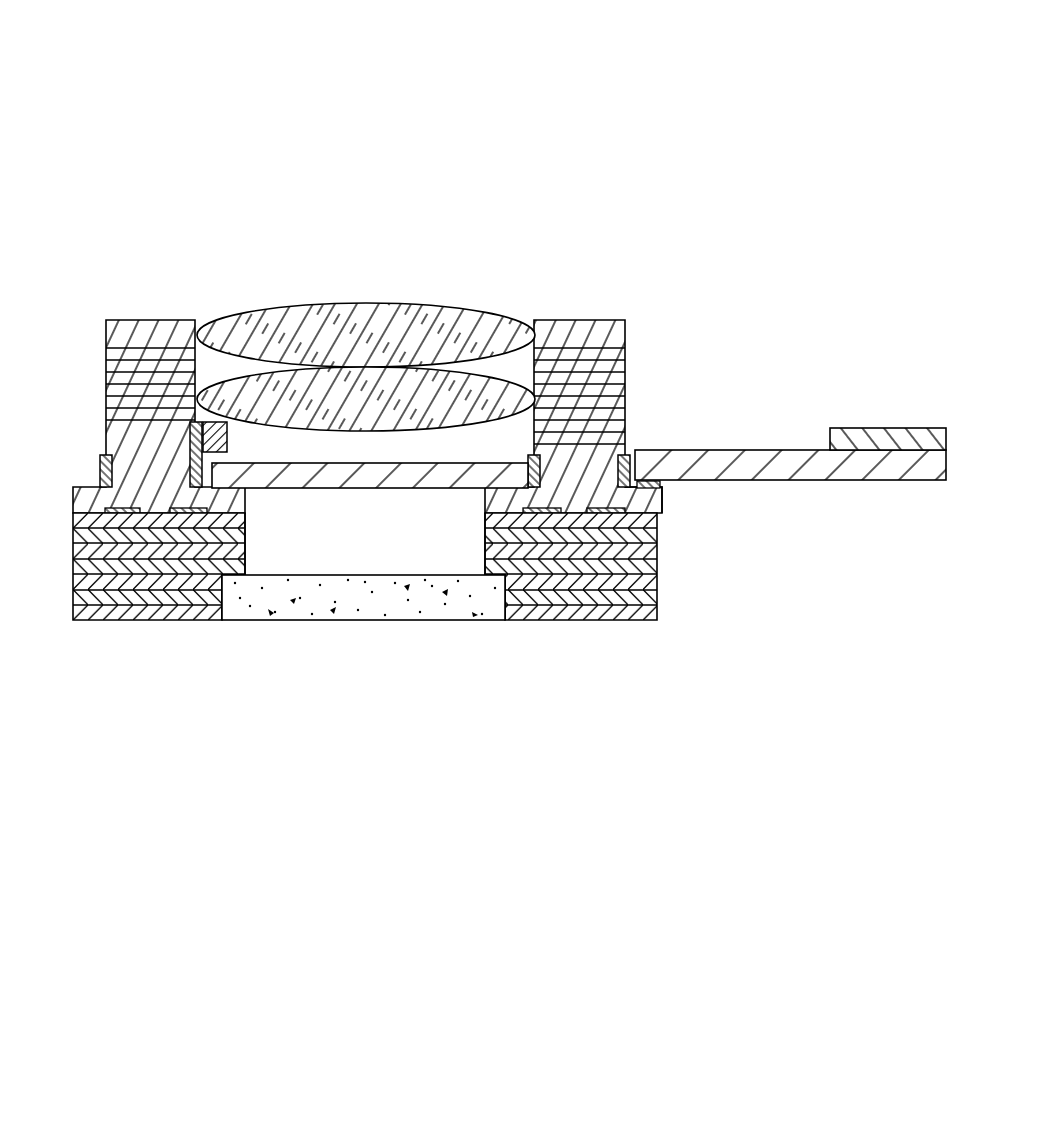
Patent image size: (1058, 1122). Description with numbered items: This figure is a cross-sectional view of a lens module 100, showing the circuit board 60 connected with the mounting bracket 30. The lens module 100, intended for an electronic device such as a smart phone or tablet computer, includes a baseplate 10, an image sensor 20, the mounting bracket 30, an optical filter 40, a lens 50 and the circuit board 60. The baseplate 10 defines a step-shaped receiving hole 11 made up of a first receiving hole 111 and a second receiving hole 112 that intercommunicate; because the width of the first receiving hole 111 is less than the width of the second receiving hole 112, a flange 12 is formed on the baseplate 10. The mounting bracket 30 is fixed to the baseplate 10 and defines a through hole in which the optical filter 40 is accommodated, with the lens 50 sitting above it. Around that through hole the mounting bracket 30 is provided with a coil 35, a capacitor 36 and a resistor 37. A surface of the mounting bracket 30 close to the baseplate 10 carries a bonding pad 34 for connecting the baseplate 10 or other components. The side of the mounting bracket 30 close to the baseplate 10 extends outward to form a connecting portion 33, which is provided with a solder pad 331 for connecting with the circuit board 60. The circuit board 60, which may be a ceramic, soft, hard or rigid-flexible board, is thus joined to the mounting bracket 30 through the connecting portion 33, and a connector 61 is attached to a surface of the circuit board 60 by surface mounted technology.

The lens module 100 is at (472, 48).
The baseplate 10 is at (152, 612).
The receiving hole 11 is at (315, 683).
The first receiving hole 111 is at (248, 550).
The second receiving hole 112 is at (224, 602).
The flange 12 is at (497, 580).
The image sensor 20 is at (355, 593).
The mounting bracket 30 is at (132, 444).
The connecting portion 33 is at (642, 500).
The solder pad 331 is at (660, 484).
The bonding pad 34 is at (625, 510).
The coil 35 is at (608, 402).
The capacitor 36 is at (215, 437).
The resistor 37 is at (105, 470).
The optical filter 40 is at (478, 480).
The lens 50 is at (447, 328).
The circuit board 60 is at (774, 378).
The connector 61 is at (856, 437).